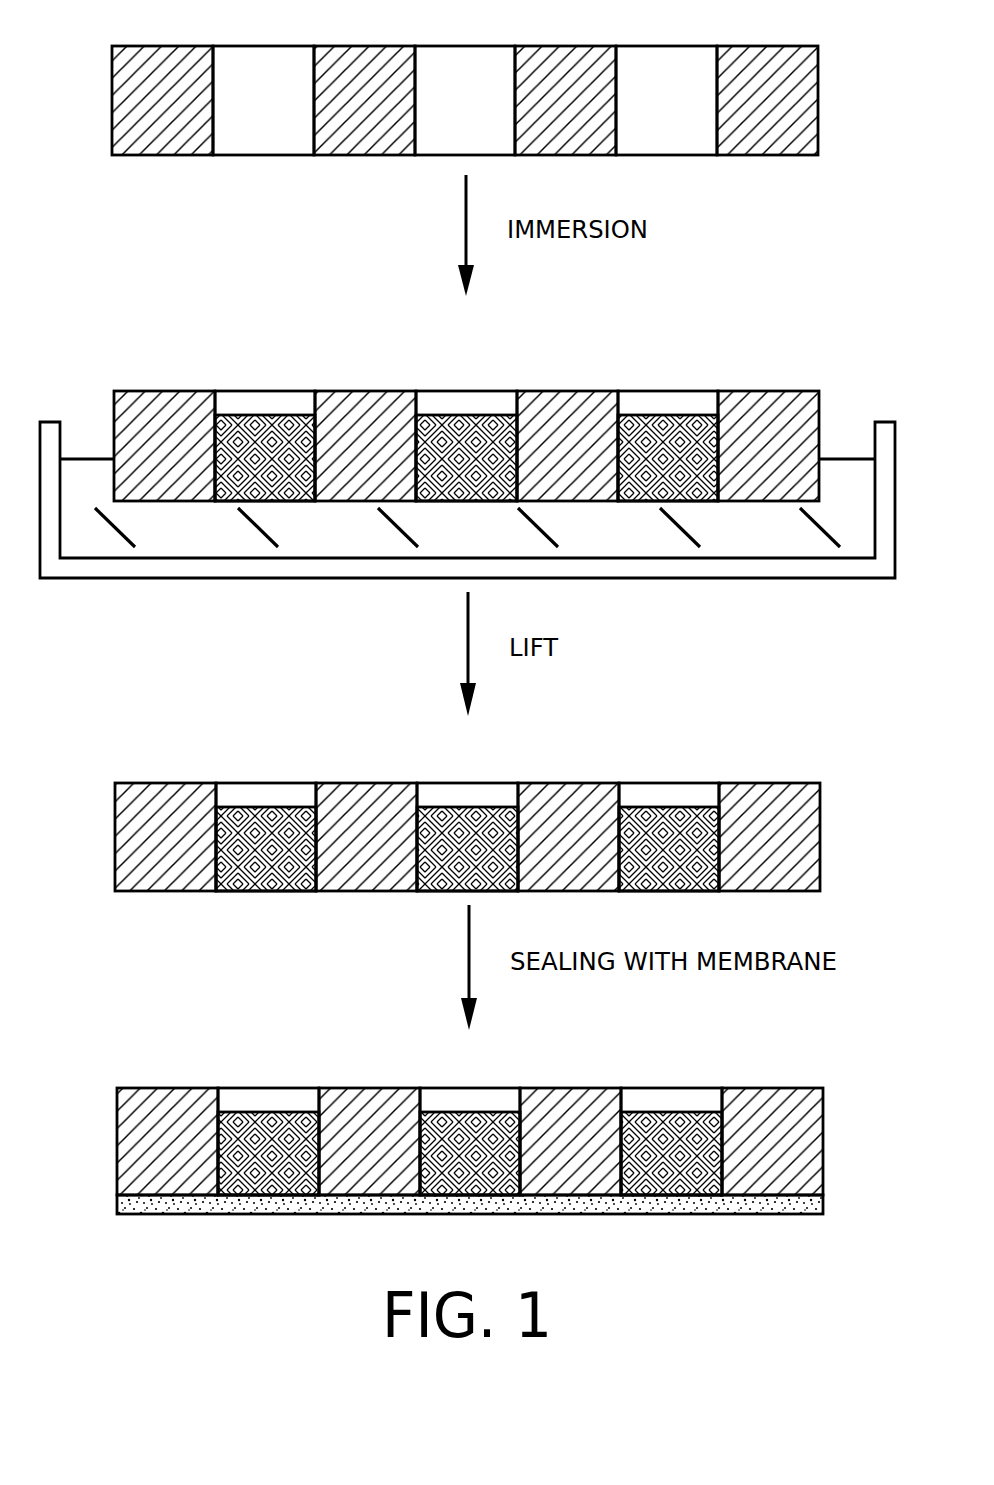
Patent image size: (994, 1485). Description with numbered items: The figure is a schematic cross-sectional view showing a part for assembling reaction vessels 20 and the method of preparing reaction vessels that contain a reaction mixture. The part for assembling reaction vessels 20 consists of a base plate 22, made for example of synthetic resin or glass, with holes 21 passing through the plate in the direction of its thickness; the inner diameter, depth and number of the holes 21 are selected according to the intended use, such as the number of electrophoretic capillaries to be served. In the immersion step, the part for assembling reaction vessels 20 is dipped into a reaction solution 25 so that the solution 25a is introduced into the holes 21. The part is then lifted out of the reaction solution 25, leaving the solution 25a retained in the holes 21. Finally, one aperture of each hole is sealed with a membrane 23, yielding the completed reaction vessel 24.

The part for assembling reaction vessels 20 is at (499, 252).
The holes 21 is at (467, 599).
The base plate 22 is at (797, 86).
The membrane 23 is at (692, 1216).
The reaction vessel 24 is at (470, 1156).
The reaction solution 25 is at (853, 468).
The solution introduced into the holes 25a is at (467, 768).